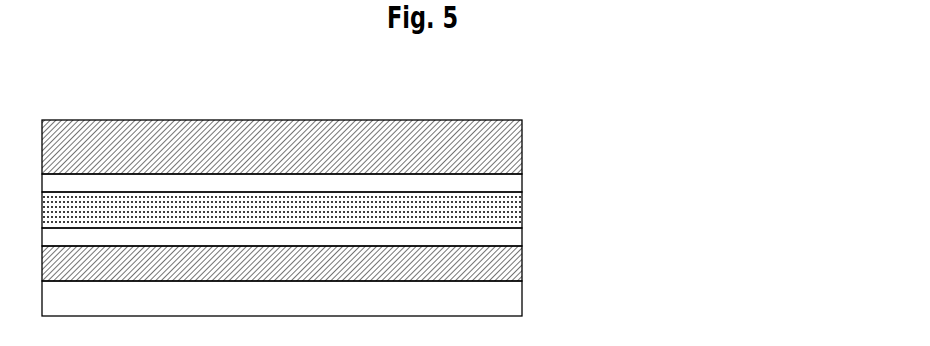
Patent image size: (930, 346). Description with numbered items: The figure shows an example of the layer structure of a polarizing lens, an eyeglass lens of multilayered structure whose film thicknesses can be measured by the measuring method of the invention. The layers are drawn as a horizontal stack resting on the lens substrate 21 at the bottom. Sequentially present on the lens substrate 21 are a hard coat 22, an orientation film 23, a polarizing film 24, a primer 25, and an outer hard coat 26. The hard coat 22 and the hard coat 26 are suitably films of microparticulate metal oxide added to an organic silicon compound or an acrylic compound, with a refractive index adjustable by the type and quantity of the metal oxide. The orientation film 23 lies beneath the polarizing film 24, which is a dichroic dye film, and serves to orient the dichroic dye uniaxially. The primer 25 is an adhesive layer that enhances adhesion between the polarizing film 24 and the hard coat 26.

The hard coat 26 is at (505, 143).
The primer 25 is at (512, 183).
The polarizing film 24 is at (512, 212).
The orientation film 23 is at (514, 236).
The hard coat 22 is at (514, 260).
The lens substrate 21 is at (514, 295).